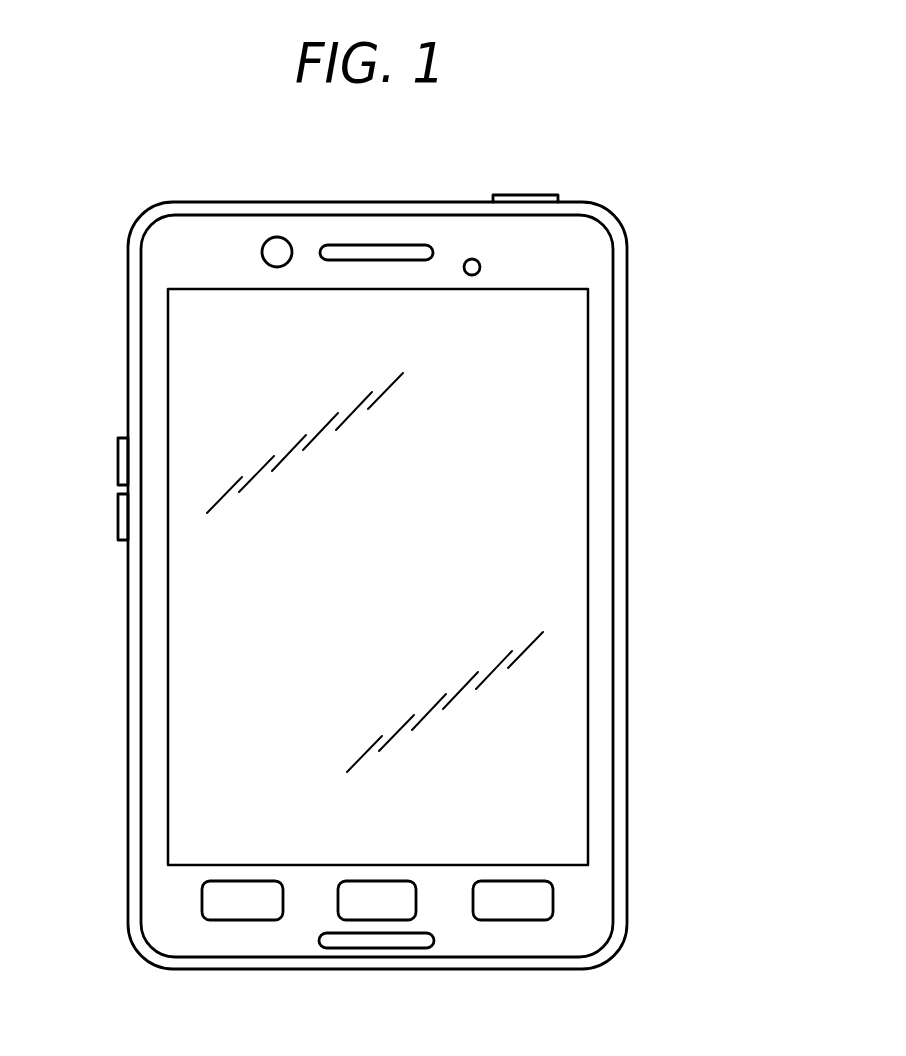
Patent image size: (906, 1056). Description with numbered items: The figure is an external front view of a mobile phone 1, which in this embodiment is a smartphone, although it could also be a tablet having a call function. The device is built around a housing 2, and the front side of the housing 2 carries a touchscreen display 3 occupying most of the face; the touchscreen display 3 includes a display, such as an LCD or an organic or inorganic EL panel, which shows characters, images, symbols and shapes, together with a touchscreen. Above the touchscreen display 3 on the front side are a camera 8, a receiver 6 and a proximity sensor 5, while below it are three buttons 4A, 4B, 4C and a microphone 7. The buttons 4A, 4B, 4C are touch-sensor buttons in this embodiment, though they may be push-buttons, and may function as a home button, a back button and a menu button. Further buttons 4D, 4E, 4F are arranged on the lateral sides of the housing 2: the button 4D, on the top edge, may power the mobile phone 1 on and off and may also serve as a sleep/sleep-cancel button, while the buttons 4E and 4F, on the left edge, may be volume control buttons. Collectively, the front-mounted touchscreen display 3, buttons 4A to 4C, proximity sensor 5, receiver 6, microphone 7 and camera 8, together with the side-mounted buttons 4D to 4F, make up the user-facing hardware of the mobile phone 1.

The mobile phone 1 is at (644, 197).
The housing 2 is at (128, 362).
The touchscreen display 3 is at (548, 522).
The button 4A is at (242, 909).
The button 4B is at (376, 897).
The button 4C is at (517, 903).
The button 4D is at (522, 195).
The button 4E is at (118, 460).
The button 4F is at (118, 518).
The proximity sensor 5 is at (470, 266).
The receiver 6 is at (370, 250).
The microphone 7 is at (382, 942).
The camera 8 is at (275, 251).